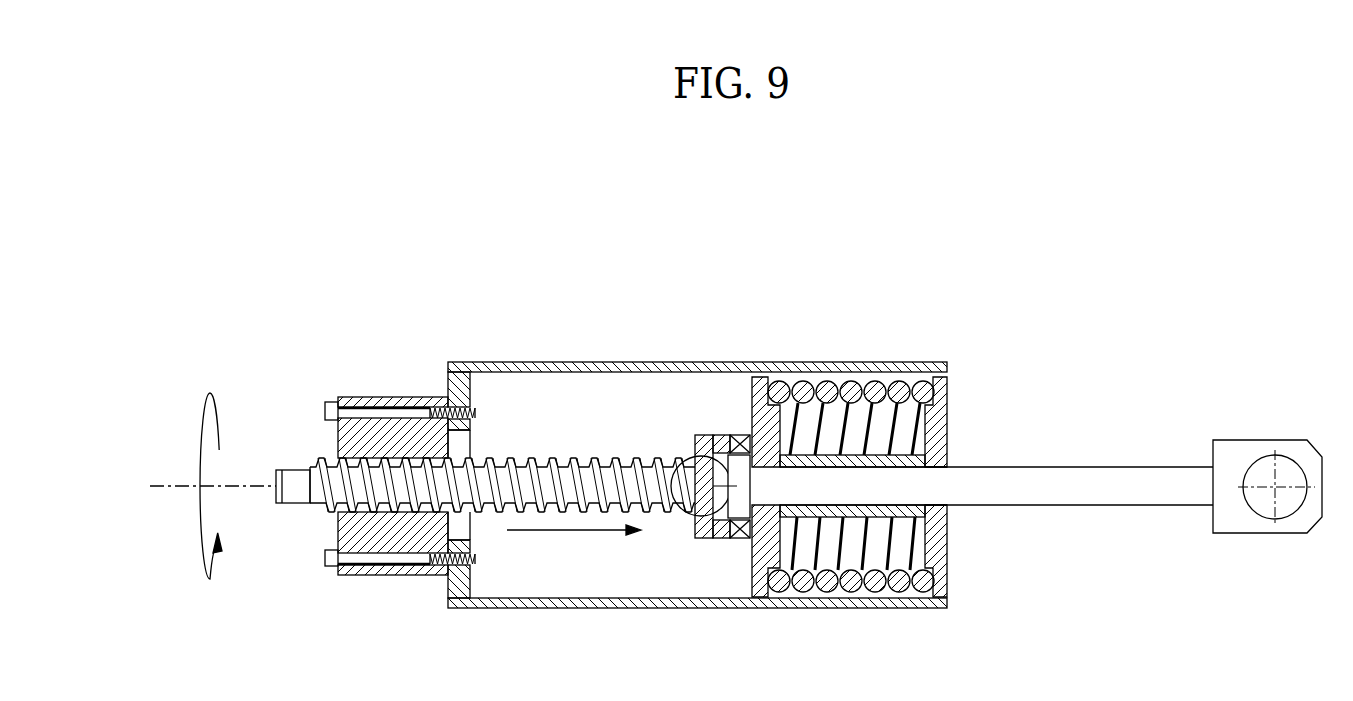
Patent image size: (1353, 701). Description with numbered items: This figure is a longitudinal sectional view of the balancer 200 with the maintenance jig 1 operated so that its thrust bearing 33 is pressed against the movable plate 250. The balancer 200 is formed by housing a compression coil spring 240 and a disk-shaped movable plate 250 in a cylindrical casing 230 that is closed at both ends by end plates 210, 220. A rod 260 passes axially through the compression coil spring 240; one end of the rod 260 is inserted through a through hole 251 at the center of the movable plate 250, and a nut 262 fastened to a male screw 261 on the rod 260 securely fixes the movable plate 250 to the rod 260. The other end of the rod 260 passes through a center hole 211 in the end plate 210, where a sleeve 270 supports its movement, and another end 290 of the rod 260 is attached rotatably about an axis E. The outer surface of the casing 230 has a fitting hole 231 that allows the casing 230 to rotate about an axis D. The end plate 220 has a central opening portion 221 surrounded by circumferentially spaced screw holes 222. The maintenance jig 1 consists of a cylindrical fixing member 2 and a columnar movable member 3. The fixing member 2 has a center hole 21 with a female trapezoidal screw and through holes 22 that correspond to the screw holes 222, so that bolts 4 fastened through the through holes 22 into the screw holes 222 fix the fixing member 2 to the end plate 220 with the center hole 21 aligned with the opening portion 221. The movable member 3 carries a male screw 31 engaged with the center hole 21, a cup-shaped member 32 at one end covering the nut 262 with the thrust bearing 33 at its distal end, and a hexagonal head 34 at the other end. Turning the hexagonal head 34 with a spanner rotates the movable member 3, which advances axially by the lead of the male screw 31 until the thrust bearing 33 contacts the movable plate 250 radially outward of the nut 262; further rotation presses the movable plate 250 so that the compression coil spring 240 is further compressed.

The maintenance jig 1 is at (254, 374).
The fixing member 2 is at (392, 477).
The movable member 3 is at (494, 454).
The bolts 4 is at (425, 488).
The center hole 21 is at (350, 480).
The through holes 22 is at (345, 411).
The male screw 31 is at (485, 516).
The cup-shaped member 32 is at (678, 449).
The thrust bearing 33 is at (742, 537).
The hexagonal head 34 is at (292, 505).
The balancer 200 is at (859, 417).
The end plate 210 is at (981, 487).
The center hole 211 is at (935, 495).
The end plate 220 is at (433, 470).
The opening portion 221 is at (447, 540).
The screw holes 222 is at (472, 413).
The casing 230 is at (633, 362).
The fitting hole 231 is at (695, 468).
The compression coil spring 240 is at (837, 590).
The movable plate 250 is at (742, 380).
The through hole 251 is at (807, 517).
The rod 260 is at (1097, 465).
The male screw 261 is at (720, 515).
The nut 262 is at (722, 452).
The sleeve 270 is at (877, 520).
The another end of the rod 290 is at (1267, 464).
The axis D is at (700, 518).
The axis E is at (1272, 490).